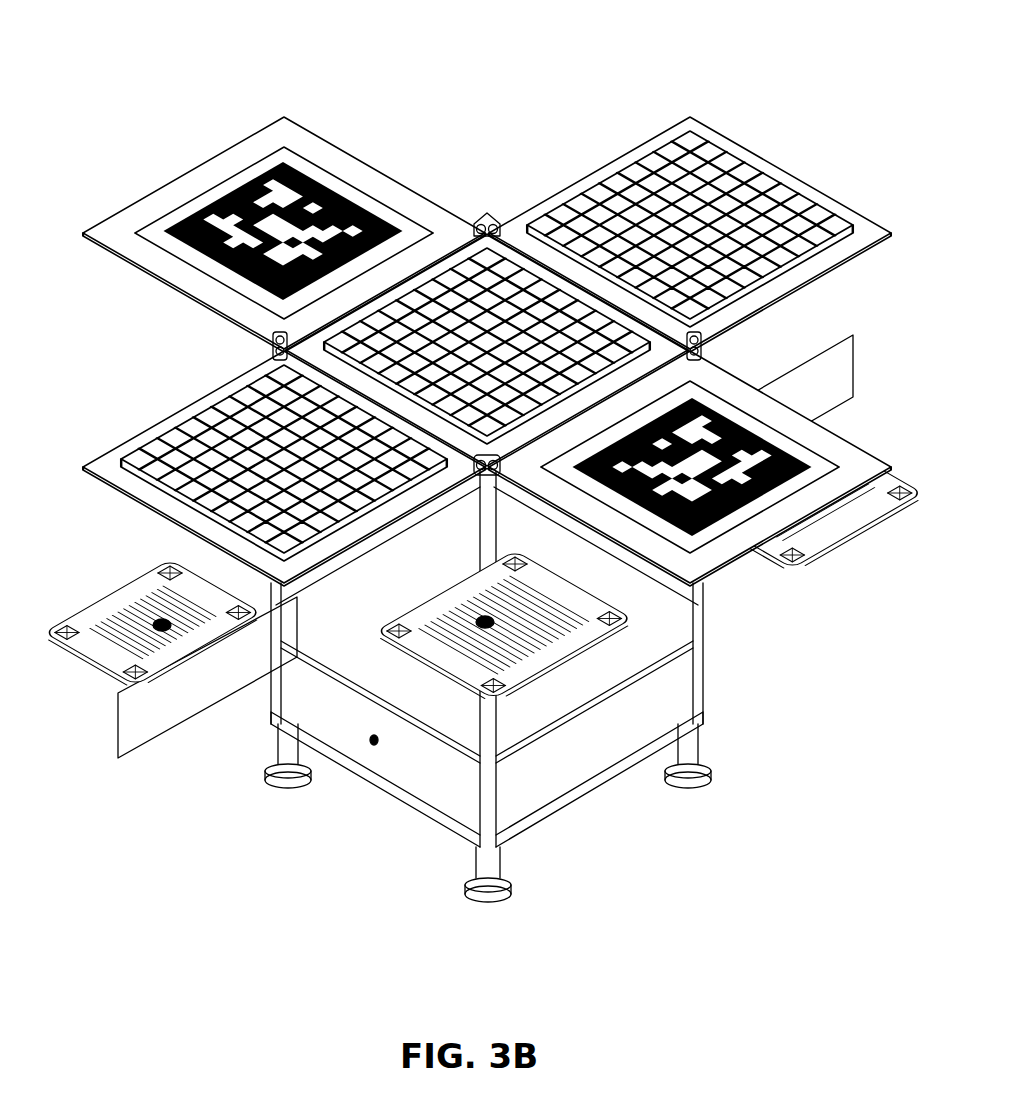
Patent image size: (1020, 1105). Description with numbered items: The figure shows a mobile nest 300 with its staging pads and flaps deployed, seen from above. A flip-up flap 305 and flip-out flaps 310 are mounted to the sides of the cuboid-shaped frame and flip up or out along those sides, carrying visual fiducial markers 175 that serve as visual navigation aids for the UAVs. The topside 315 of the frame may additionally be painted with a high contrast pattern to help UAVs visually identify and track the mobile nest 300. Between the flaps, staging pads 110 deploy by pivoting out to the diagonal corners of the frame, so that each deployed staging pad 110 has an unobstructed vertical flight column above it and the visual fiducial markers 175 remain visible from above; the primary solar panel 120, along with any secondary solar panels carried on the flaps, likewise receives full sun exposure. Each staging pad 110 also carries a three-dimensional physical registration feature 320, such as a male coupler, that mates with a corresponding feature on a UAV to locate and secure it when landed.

The mobile nest 300 is at (233, 68).
The flip-up flap 305 is at (790, 172).
The flip-out flaps 310 is at (170, 191).
The topside 315 is at (496, 247).
The primary solar panel 120 is at (691, 265).
The visual fiducial markers 175 is at (290, 234).
The staging pads 110 is at (92, 668).
The physical registration features 320 is at (155, 623).